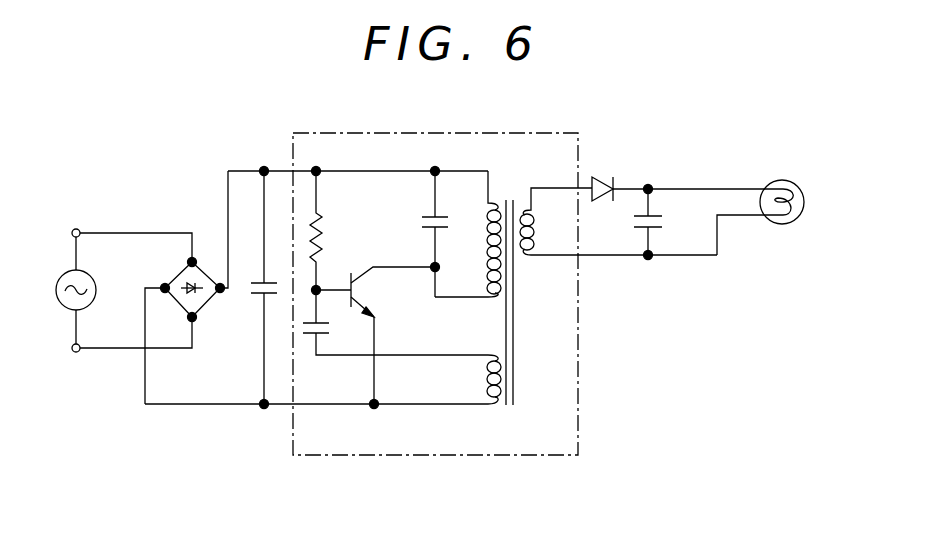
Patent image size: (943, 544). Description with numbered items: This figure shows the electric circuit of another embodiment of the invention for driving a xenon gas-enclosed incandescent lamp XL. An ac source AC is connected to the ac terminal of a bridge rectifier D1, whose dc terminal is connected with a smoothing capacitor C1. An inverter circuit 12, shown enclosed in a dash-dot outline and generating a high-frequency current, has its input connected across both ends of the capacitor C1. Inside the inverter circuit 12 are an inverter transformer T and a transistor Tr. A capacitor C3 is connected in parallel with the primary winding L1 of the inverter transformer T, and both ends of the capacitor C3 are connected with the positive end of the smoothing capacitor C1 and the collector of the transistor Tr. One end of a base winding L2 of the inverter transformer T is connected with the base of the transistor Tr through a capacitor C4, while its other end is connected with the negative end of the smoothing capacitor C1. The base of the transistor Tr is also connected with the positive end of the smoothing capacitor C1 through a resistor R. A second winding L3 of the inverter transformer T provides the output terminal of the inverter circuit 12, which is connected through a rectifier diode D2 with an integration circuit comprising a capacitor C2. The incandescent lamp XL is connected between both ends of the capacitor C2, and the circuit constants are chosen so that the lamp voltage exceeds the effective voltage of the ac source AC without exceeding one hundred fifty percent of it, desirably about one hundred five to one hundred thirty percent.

The ac source AC is at (61, 290).
The bridge rectifier D1 is at (195, 304).
The smoothing capacitor C1 is at (257, 287).
The resistor R is at (329, 230).
The transistor Tr is at (375, 292).
The capacitor C4 is at (395, 322).
The capacitor C3 is at (413, 234).
The primary winding L1 is at (468, 234).
The base winding L2 is at (472, 379).
The inverter transformer T is at (513, 284).
The second winding L3 is at (618, 221).
The rectifier diode D2 is at (676, 175).
The capacitor C2 is at (628, 222).
The incandescent lamp XL is at (799, 202).
The inverter circuit 12 is at (578, 412).